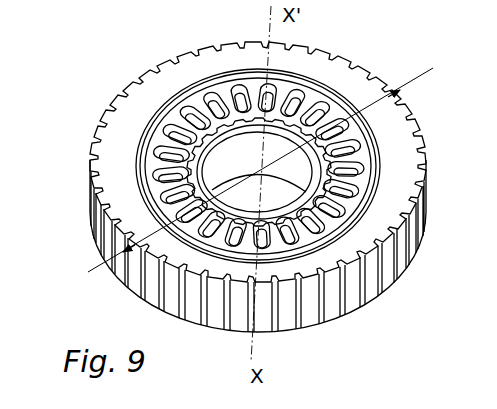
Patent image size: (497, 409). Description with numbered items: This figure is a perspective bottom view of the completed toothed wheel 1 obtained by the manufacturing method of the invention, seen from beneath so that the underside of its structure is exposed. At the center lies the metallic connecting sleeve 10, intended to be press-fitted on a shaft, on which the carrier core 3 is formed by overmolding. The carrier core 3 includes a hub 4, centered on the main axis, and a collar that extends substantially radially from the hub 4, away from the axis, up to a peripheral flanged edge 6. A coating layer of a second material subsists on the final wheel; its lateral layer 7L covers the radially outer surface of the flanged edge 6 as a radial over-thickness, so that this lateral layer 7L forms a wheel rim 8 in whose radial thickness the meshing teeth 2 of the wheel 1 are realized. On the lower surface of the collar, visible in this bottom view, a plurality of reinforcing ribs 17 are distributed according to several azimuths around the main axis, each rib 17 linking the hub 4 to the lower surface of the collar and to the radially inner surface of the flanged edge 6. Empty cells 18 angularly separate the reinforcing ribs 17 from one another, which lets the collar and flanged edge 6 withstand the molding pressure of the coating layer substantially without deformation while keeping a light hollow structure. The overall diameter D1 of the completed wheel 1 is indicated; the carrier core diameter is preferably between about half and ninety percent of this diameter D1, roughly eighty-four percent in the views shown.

The toothed wheel 1 is at (396, 58).
The meshing teeth 2 is at (346, 50).
The carrier core 3 is at (170, 125).
The hub 4 is at (229, 110).
The peripheral flanged edge 6 is at (398, 103).
The lateral layer 7L is at (397, 137).
The wheel rim 8 is at (162, 74).
The metallic connecting sleeve 10 is at (210, 145).
The reinforcing ribs 17 is at (388, 172).
The empty cells 18 is at (360, 167).
The overall diameter of the completed wheel D1 is at (88, 272).